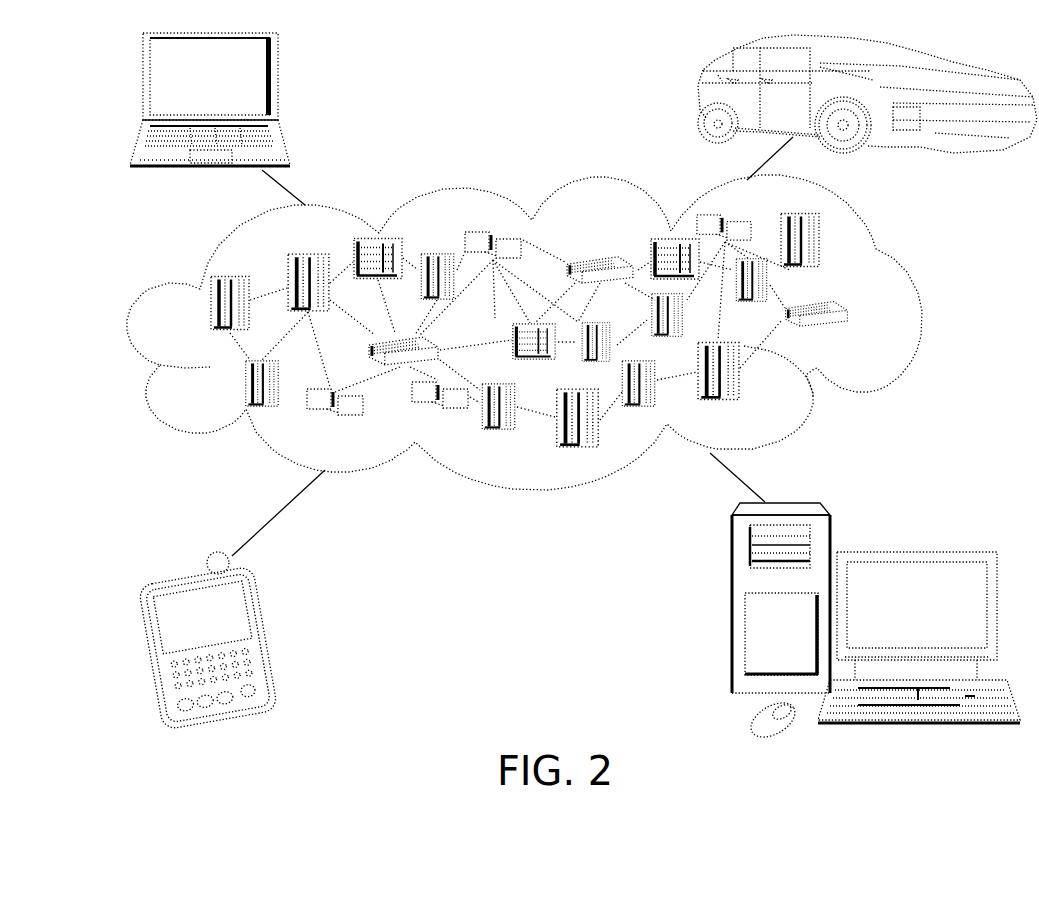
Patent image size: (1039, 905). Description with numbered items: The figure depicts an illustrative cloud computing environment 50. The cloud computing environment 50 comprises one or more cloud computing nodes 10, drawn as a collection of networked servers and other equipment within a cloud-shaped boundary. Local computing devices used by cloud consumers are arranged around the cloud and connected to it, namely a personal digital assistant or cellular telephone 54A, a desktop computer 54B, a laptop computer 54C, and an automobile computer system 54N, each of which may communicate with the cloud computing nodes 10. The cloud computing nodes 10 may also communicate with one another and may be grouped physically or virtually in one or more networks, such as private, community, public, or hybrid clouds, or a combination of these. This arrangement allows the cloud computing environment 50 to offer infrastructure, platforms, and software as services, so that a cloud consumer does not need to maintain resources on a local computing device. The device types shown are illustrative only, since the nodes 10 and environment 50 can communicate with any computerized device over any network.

The cloud computing node 10 is at (868, 341).
The cloud computing environment 50 is at (549, 332).
The personal digital assistant or cellular telephone 54A is at (272, 632).
The desktop computer 54B is at (913, 552).
The laptop computer 54C is at (282, 80).
The automobile computer system 54N is at (700, 98).